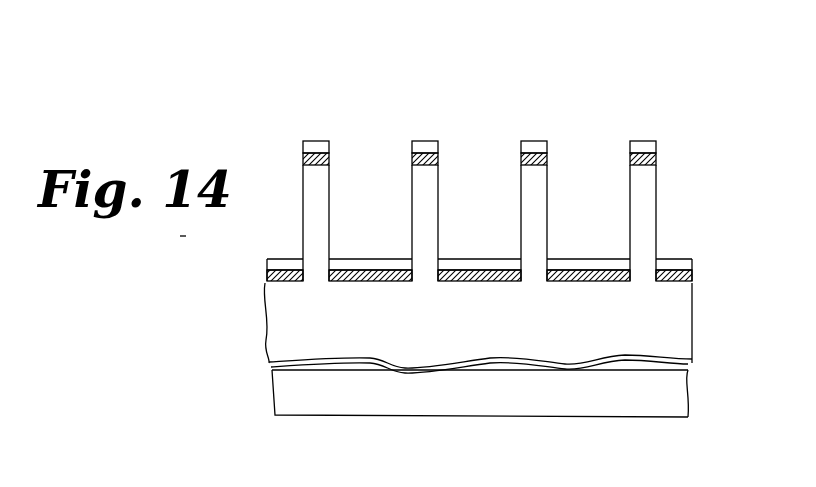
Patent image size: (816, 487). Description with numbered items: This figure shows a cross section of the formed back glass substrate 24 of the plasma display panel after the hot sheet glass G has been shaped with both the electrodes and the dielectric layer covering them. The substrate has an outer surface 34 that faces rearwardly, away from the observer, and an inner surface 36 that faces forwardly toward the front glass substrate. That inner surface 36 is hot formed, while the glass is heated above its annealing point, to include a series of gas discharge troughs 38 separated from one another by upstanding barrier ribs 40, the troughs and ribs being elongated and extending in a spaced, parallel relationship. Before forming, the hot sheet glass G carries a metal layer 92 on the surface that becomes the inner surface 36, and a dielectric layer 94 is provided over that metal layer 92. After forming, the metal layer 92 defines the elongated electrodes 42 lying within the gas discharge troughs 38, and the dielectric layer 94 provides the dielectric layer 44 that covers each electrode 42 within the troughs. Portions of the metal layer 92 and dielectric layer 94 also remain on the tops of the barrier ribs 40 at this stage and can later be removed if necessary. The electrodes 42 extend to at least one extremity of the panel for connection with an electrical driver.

The back glass substrate 24 is at (246, 308).
The outer surface 34 is at (338, 415).
The inner surface 36 is at (344, 104).
The gas discharge troughs 38 is at (332, 198).
The barrier ribs 40 is at (330, 221).
The electrodes 42 is at (363, 283).
The dielectric layer 44 is at (340, 259).
The metal layer 92 is at (302, 159).
The dielectric layer 94 is at (311, 140).
The hot sheet glass G is at (700, 320).